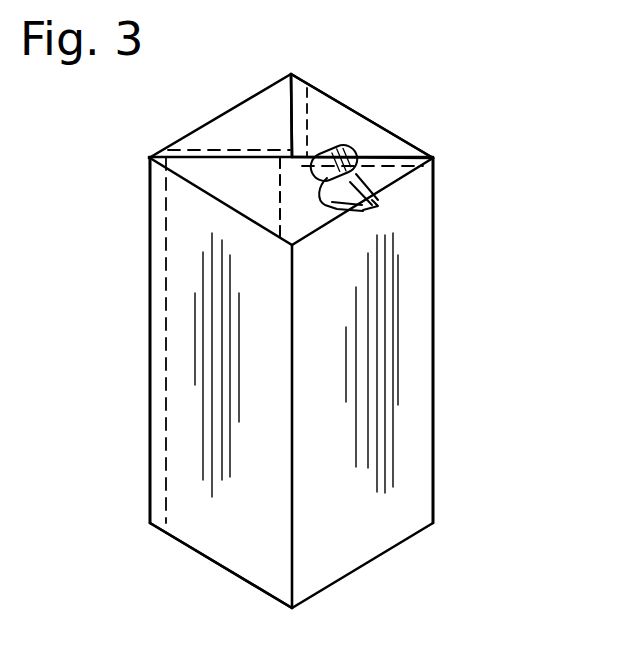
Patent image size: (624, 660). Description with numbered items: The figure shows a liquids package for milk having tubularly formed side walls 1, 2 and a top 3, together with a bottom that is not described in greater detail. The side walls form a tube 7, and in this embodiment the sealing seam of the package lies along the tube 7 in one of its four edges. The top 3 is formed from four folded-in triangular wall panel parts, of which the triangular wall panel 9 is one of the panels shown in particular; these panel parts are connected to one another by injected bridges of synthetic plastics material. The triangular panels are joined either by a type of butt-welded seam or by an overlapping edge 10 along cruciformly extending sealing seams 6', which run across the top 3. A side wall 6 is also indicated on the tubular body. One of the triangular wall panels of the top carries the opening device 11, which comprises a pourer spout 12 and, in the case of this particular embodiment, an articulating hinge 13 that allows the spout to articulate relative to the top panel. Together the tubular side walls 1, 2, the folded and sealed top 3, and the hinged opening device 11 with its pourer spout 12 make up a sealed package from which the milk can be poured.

The side wall 1 is at (390, 500).
The side wall 2 is at (226, 540).
The top 3 is at (348, 107).
The side wall 6 is at (147, 340).
The sealing seams 6' is at (203, 299).
The tube 7 is at (435, 409).
The triangular wall panel 9 is at (395, 148).
The overlapping edge 10 is at (310, 86).
The opening device 11 is at (380, 206).
The pourer spout 12 is at (361, 183).
The articulating hinge 13 is at (334, 150).